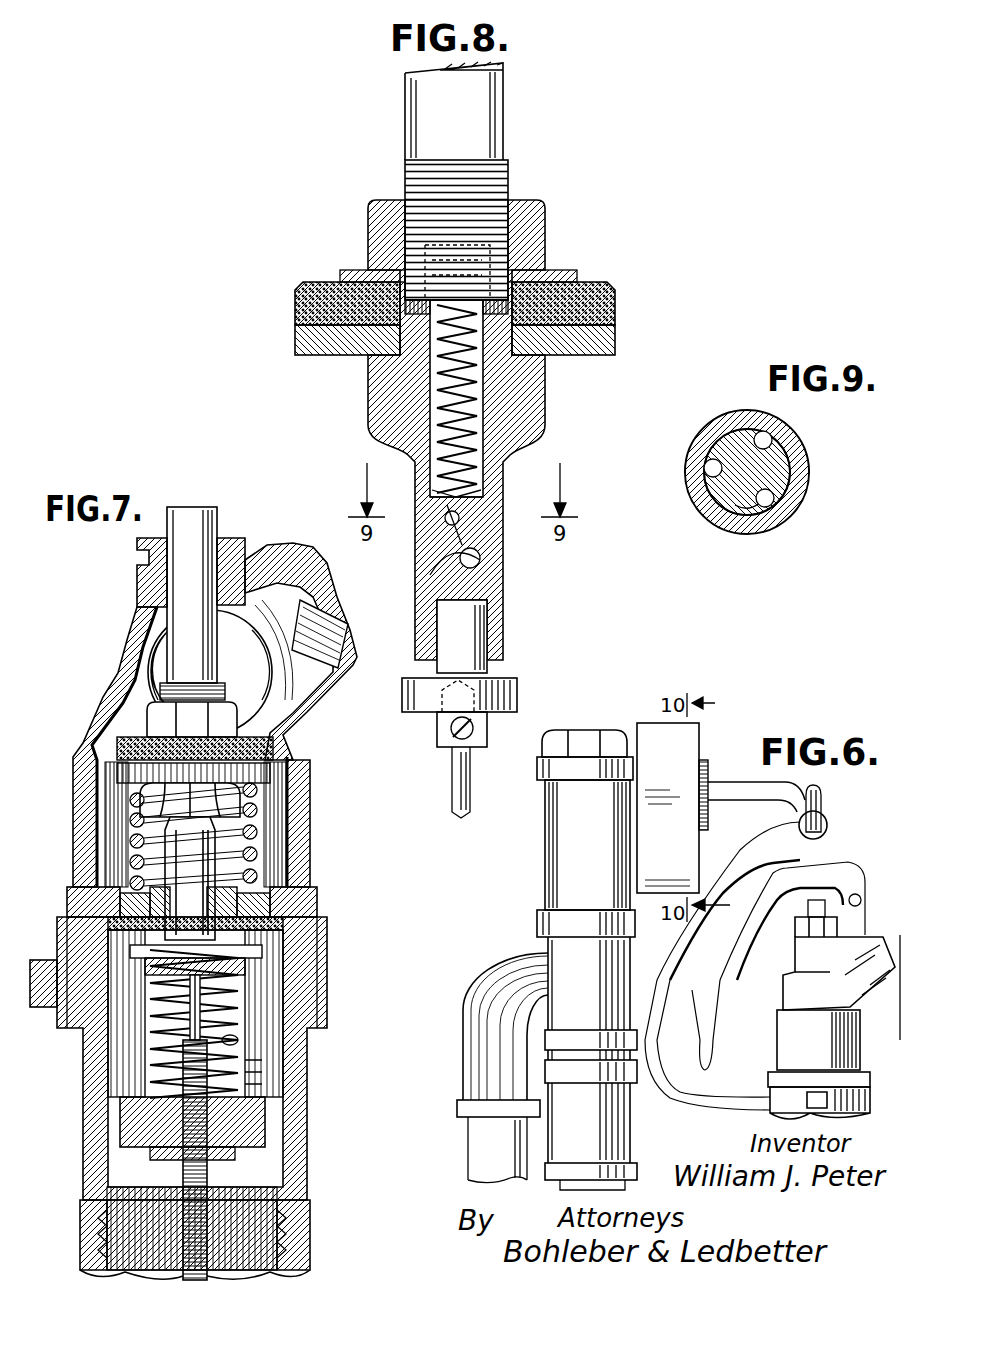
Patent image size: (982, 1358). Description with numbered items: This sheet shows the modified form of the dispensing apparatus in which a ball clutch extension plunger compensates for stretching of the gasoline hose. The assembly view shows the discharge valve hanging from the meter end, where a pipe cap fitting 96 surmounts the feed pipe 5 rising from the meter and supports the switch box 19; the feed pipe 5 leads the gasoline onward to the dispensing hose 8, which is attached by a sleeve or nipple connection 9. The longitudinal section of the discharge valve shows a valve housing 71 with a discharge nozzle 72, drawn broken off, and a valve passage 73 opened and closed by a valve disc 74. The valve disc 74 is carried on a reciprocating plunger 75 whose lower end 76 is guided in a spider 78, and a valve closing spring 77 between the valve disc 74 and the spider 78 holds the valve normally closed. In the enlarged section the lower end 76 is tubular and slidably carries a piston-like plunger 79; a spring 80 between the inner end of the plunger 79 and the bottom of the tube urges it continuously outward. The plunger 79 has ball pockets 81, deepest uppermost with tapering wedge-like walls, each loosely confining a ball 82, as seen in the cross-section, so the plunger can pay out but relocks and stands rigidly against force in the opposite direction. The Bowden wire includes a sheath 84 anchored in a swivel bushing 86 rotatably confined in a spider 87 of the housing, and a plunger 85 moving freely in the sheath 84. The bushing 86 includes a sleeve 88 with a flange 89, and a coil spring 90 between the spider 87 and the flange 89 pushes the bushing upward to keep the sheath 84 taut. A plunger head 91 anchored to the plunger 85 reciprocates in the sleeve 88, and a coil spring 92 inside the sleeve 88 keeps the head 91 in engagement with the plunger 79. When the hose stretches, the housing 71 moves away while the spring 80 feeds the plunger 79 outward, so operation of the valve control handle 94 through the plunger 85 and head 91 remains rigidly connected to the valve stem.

In FIG. 6, the feed pipe 5 is at (480, 1149).
In FIG. 6, the dispensing hose 8 is at (562, 1193).
In FIG. 6, the sleeve or nipple connection 9 is at (624, 1139).
In FIG. 6, the switch box 19 is at (701, 845).
In FIG. 7, the valve housing 71 is at (310, 815).
In FIG. 6, the valve housing 71 is at (782, 1047).
In FIG. 7, the discharge nozzle 72 is at (342, 628).
In FIG. 6, the discharge nozzle 72 is at (894, 952).
In FIG. 7, the valve passage 73 is at (280, 733).
In FIG. 8, the valve disc 74 is at (612, 318).
In FIG. 7, the valve disc 74 is at (110, 737).
In FIG. 8, the reciprocating plunger 75 is at (493, 133).
In FIG. 7, the reciprocating plunger 75 is at (182, 645).
In FIG. 6, the reciprocating plunger 75 is at (803, 913).
In FIG. 8, the lower end of valve stem 76 is at (500, 570).
In FIG. 9, the lower end of valve stem 76 is at (790, 512).
In FIG. 7, the lower end of valve stem 76 is at (160, 840).
In FIG. 7, the valve closing spring 77 is at (178, 857).
In FIG. 7, the spider 78 is at (250, 905).
In FIG. 8, the plunger 79 is at (468, 634).
In FIG. 9, the plunger 79 is at (770, 470).
In FIG. 7, the plunger 79 is at (284, 921).
In FIG. 8, the spring 80 is at (480, 396).
In FIG. 8, the ball pockets 81 is at (420, 576).
In FIG. 9, the ball pockets 81 is at (713, 527).
In FIG. 8, the ball 82 is at (445, 515).
In FIG. 9, the ball 82 is at (752, 532).
In FIG. 7, the sheath 84 is at (210, 1183).
In FIG. 8, the plunger 85 is at (465, 814).
In FIG. 7, the plunger 85 is at (200, 1023).
In FIG. 7, the swivel bushing 86 is at (245, 1135).
In FIG. 7, the spider 87 is at (265, 1093).
In FIG. 7, the sleeve 88 is at (238, 1007).
In FIG. 7, the flange 89 is at (250, 947).
In FIG. 7, the coil spring 90 is at (232, 1040).
In FIG. 8, the plunger head 91 is at (517, 694).
In FIG. 7, the plunger head 91 is at (222, 963).
In FIG. 7, the coil spring 92 is at (225, 1072).
In FIG. 6, the valve control handle 94 is at (714, 1029).
In FIG. 6, the pipe cap fitting 96 is at (557, 875).